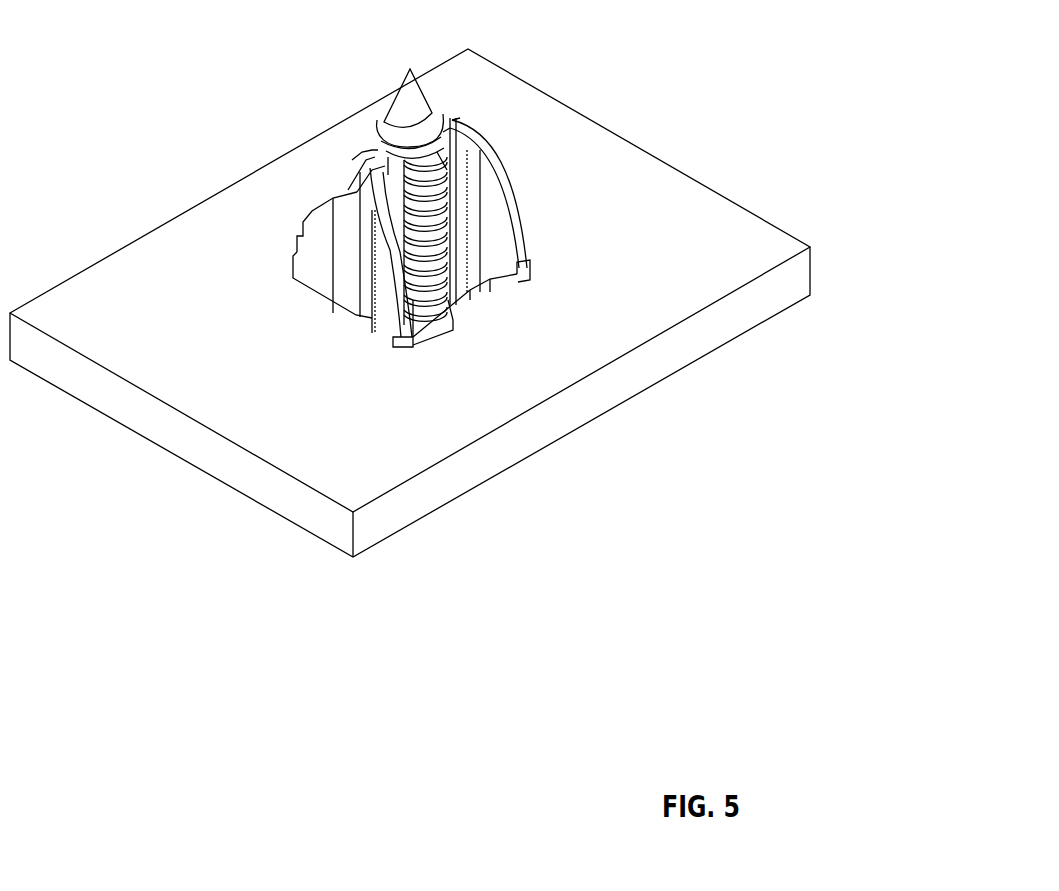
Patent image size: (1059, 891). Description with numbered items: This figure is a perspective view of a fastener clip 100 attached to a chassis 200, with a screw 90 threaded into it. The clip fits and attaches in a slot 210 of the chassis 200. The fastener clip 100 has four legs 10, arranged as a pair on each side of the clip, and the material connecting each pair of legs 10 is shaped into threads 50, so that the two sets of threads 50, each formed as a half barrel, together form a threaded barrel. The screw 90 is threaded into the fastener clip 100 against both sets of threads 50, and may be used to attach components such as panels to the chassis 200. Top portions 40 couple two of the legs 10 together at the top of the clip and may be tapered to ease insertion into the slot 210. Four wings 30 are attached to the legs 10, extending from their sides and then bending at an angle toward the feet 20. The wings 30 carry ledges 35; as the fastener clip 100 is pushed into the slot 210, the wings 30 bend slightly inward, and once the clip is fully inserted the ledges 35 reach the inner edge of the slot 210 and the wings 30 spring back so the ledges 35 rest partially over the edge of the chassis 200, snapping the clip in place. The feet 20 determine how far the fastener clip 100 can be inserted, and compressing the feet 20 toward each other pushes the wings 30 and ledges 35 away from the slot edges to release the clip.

The fastener clip 100 is at (502, 106).
The chassis 200 is at (433, 397).
The slot 210 is at (483, 298).
The screw 90 is at (403, 102).
The top portions 40 is at (372, 155).
The threads 50 is at (445, 239).
The legs 10 is at (388, 207).
The feet 20 is at (318, 240).
The wings 30 is at (316, 222).
The ledges 35 is at (415, 338).